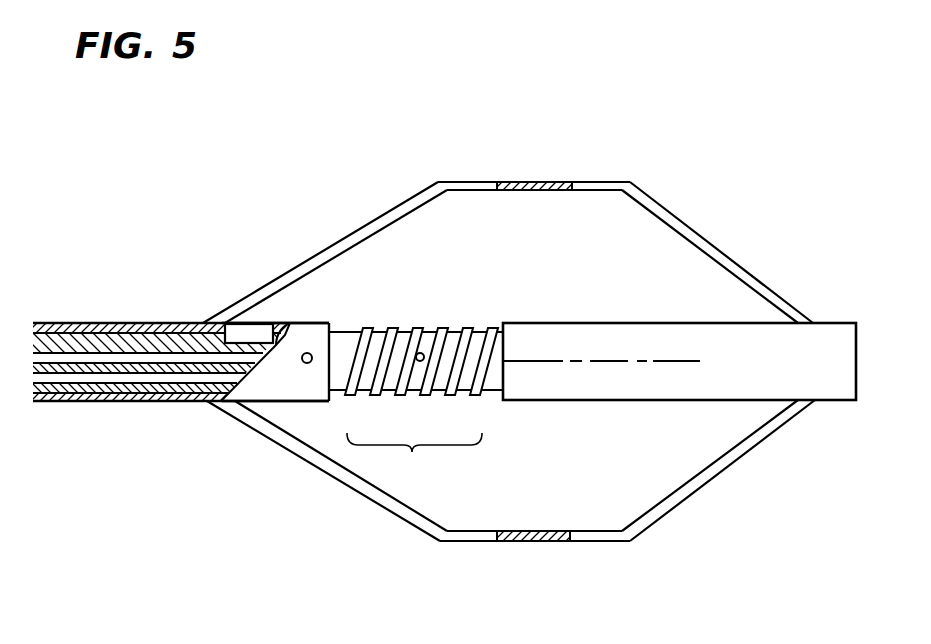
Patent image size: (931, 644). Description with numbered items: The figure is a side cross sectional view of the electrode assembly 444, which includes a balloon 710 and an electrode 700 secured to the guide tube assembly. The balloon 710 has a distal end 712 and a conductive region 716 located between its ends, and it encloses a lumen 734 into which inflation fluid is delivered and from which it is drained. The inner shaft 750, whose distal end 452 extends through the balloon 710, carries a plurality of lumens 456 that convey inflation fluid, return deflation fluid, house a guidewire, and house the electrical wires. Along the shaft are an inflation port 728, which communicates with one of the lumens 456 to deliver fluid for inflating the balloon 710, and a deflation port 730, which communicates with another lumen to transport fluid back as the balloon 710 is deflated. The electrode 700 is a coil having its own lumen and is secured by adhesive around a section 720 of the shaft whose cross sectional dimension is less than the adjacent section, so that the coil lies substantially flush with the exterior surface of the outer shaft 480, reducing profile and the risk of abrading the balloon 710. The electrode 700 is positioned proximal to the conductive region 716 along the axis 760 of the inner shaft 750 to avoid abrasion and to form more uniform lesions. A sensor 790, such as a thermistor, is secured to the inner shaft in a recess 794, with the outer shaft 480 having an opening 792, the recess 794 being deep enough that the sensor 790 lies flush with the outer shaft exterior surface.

The electrode assembly 444 is at (712, 163).
The balloon 710 is at (627, 183).
The conductive region 716 is at (540, 182).
The lumen of the balloon 734 is at (682, 270).
The distal end of the balloon 712 is at (783, 291).
The distal end of the inner shaft 452 is at (843, 322).
The axis of the inner shaft 760 is at (617, 362).
The inner shaft 750 is at (97, 322).
The outer shaft 480 is at (87, 402).
The lumens 456 is at (180, 358).
The sensor 790 is at (253, 323).
The opening 792 is at (225, 323).
The recess 794 is at (267, 323).
The deflation port 730 is at (307, 363).
The electrode 700 is at (445, 328).
The inflation port 728 is at (420, 362).
The section of the shaft 720 is at (414, 460).